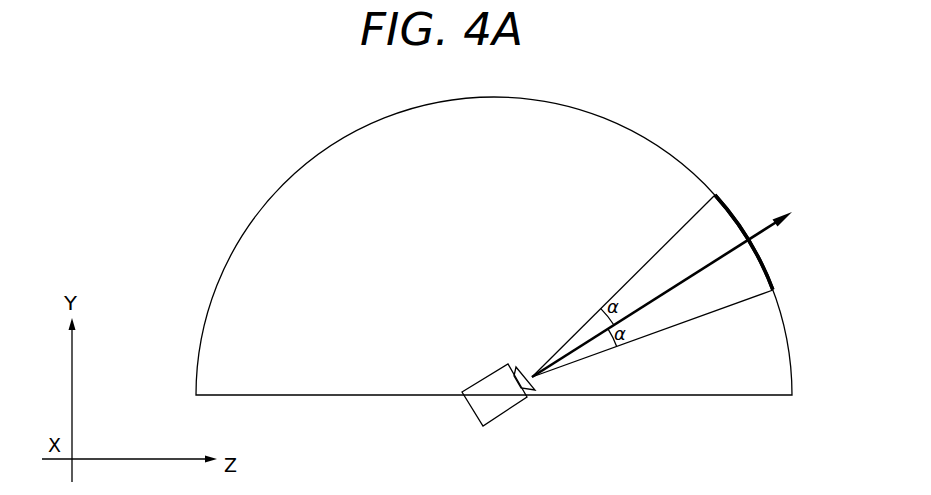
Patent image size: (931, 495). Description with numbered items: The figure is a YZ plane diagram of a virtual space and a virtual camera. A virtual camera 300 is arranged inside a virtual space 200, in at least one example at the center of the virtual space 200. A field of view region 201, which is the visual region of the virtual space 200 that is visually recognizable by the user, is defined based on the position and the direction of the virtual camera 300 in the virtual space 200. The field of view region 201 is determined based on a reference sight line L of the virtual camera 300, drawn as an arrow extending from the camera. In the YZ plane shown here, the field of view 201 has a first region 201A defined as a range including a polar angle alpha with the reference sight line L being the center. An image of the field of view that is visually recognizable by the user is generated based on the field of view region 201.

The virtual space 200 is at (324, 150).
The field of view region 201 is at (718, 225).
The first region 201A is at (744, 242).
The virtual camera 300 is at (500, 421).
The reference sight line L is at (735, 255).